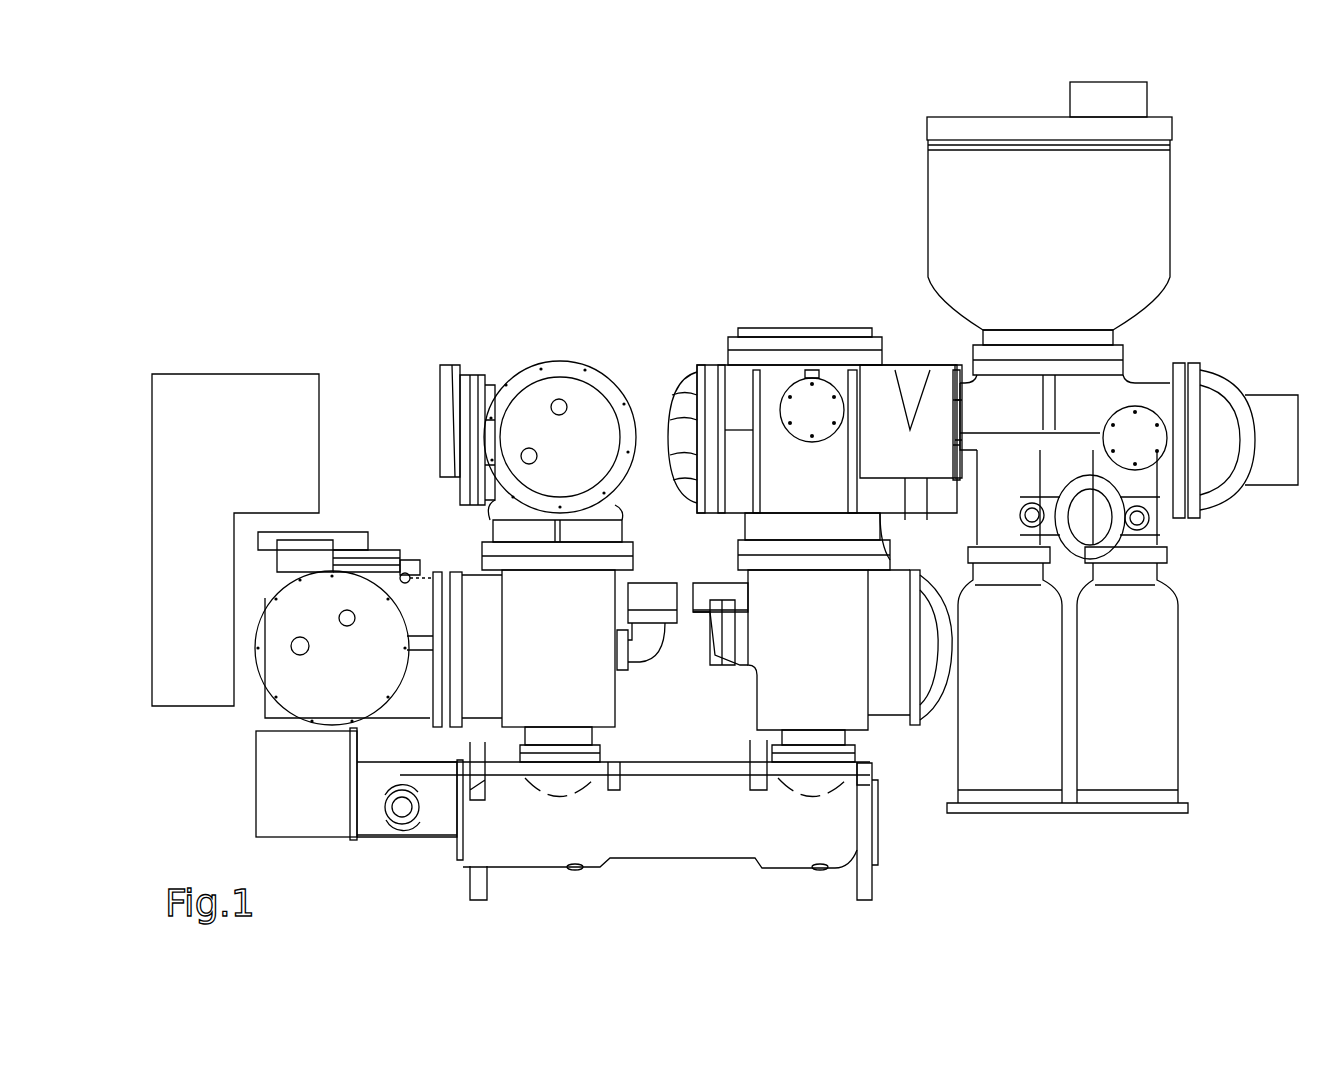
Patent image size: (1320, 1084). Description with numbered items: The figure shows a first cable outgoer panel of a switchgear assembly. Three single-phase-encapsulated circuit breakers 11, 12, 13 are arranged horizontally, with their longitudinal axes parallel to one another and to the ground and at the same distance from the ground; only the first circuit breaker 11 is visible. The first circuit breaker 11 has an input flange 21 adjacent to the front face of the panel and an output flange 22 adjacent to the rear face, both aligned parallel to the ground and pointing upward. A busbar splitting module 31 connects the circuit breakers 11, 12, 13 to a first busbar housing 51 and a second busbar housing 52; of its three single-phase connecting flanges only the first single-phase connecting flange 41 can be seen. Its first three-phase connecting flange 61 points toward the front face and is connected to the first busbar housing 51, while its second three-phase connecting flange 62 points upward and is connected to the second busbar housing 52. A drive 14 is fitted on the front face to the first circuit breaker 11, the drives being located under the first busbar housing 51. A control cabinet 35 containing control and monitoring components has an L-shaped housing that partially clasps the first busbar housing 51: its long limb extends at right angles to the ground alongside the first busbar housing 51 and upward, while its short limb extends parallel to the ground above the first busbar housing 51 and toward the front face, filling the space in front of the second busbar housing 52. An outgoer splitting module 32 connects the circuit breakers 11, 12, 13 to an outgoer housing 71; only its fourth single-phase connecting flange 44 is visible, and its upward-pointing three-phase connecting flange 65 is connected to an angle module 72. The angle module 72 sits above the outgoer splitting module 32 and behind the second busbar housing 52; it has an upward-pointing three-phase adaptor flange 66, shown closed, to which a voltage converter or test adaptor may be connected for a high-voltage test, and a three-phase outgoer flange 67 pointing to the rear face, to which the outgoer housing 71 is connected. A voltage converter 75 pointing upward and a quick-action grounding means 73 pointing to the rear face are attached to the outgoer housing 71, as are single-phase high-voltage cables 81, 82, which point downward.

The first circuit breaker 11 is at (510, 840).
The second circuit breaker 12 is at (407, 844).
The third circuit breaker 13 is at (639, 833).
The first drive 14 is at (268, 816).
The input flange 21 is at (598, 757).
The output flange 22 is at (845, 765).
The busbar splitting module 31 is at (528, 715).
The outgoer splitting module 32 is at (830, 715).
The control cabinet 35 is at (195, 392).
The first single-phase connecting flange 41 is at (600, 752).
The fourth single-phase connecting flange 44 is at (770, 748).
The first busbar housing 51 is at (287, 695).
The second busbar housing 52 is at (531, 405).
The first three-phase connecting flange 61 is at (447, 568).
The second three-phase connecting flange 62 is at (480, 557).
The three-phase connecting flange 65 is at (738, 563).
The three-phase adaptor flange 66 is at (843, 340).
The three-phase outgoer flange 67 is at (910, 515).
The outgoer housing 71 is at (1068, 408).
The angle module 72 is at (775, 448).
The quick-action grounding means 73 is at (1212, 430).
The voltage converter 75 is at (1157, 227).
The first high-voltage cable 81 is at (1030, 770).
The second high-voltage cable 82 is at (1158, 675).